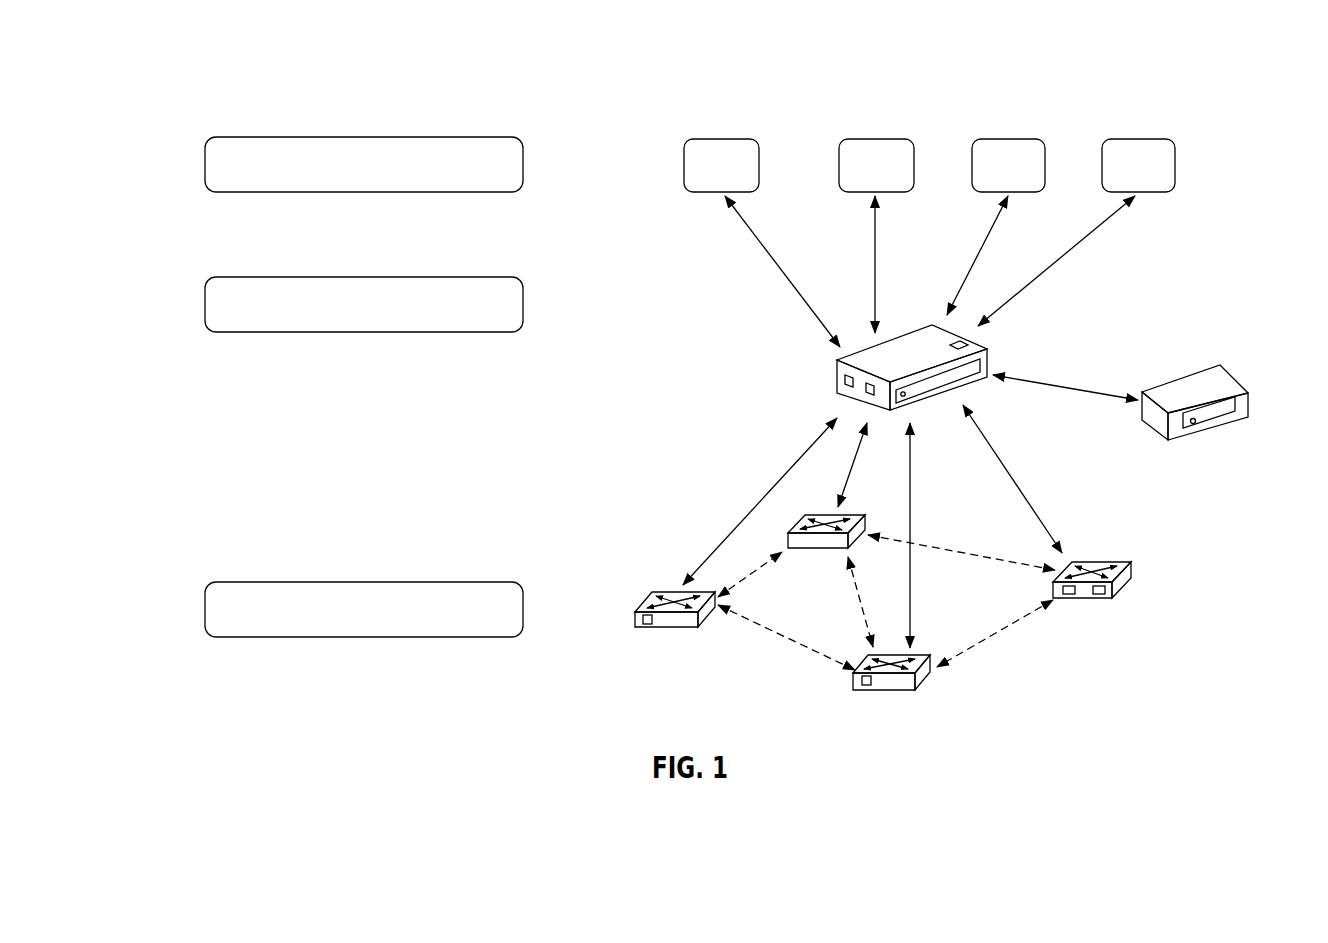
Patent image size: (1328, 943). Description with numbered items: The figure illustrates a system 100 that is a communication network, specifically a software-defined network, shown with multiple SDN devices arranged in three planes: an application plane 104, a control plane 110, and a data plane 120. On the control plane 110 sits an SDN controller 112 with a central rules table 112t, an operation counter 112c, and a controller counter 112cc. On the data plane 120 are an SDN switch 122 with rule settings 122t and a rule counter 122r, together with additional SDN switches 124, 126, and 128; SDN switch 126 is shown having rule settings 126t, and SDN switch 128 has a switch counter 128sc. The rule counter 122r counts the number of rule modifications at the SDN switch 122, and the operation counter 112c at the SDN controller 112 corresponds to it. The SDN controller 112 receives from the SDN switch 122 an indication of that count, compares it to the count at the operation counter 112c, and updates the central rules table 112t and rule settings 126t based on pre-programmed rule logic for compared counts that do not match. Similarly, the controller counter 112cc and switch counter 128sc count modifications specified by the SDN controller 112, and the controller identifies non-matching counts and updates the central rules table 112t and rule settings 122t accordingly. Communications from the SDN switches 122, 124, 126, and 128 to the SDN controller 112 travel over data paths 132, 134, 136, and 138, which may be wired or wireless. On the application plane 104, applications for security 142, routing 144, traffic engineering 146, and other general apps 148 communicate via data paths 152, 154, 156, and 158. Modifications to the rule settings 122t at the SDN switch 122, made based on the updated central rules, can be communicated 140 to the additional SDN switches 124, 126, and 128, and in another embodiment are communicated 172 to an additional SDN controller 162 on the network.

The system 100 is at (1114, 56).
The application plane 104 is at (218, 170).
The control plane 110 is at (218, 310).
The data plane 120 is at (218, 615).
The SDN controller 112 is at (992, 355).
The central rules table 112t is at (845, 378).
The operation counter 112c is at (866, 390).
The controller counter 112cc is at (958, 350).
The SDN switch 122 is at (1132, 572).
The rule counter 122r is at (1068, 597).
The rule settings 122t is at (1100, 597).
The additional SDN switch 124 is at (838, 550).
The additional SDN switch 126 is at (910, 692).
The rule settings 126t is at (866, 690).
The additional SDN switch 128 is at (692, 628).
The switch counter 128sc is at (648, 625).
The data path 132 is at (1030, 500).
The data path 134 is at (848, 475).
The data path 136 is at (912, 498).
The data path 138 is at (770, 492).
The communication of rule setting modifications 140 is at (750, 572).
The security application 142 is at (718, 138).
The routing application 144 is at (874, 138).
The traffic engineering application 146 is at (1006, 138).
The general application 148 is at (1139, 138).
The data path 152 is at (785, 278).
The data path 154 is at (870, 222).
The data path 156 is at (982, 240).
The data path 158 is at (1062, 255).
The additional SDN controller 162 is at (1188, 442).
The communication of rule setting modifications to additional controller 172 is at (1092, 384).